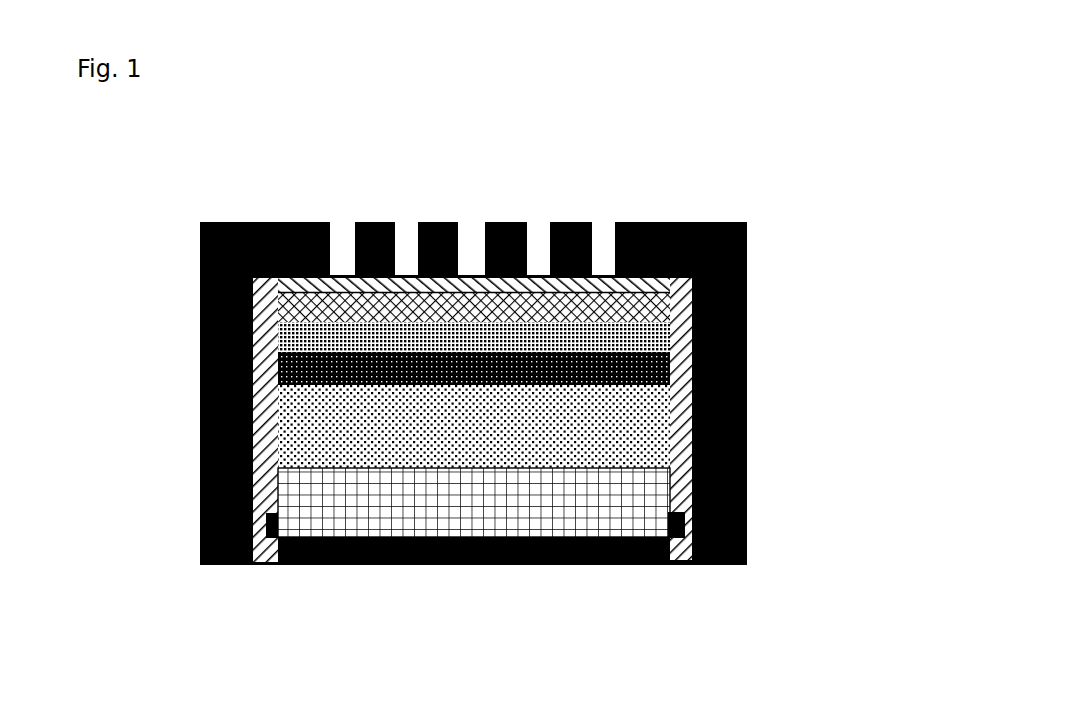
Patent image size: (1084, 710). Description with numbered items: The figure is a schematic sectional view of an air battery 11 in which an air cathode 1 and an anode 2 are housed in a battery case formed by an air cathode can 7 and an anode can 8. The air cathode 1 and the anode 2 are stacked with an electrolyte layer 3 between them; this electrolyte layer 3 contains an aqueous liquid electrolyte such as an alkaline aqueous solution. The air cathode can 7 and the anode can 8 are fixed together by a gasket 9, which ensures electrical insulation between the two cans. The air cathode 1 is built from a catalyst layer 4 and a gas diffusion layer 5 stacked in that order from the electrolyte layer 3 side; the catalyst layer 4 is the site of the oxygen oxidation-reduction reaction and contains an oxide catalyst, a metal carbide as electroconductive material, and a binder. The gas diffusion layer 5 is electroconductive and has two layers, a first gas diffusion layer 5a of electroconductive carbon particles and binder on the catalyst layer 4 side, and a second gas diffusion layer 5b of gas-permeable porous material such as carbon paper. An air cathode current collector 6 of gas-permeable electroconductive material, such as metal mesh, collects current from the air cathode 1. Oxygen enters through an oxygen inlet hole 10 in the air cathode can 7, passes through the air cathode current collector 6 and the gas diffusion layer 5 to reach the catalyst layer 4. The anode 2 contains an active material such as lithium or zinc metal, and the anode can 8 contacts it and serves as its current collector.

The air cathode 1 is at (613, 403).
The anode 2 is at (747, 487).
The electrolyte layer 3 is at (747, 421).
The catalyst layer 4 is at (747, 372).
The gas diffusion layer 5 is at (586, 326).
The first gas diffusion layer 5a is at (747, 333).
The second gas diffusion layer 5b is at (747, 305).
The air cathode current collector 6 is at (747, 277).
The air cathode can 7 is at (717, 566).
The anode can 8 is at (480, 566).
The gasket 9 is at (200, 475).
The oxygen inlet hole 10 is at (607, 232).
The air battery 11 is at (523, 377).